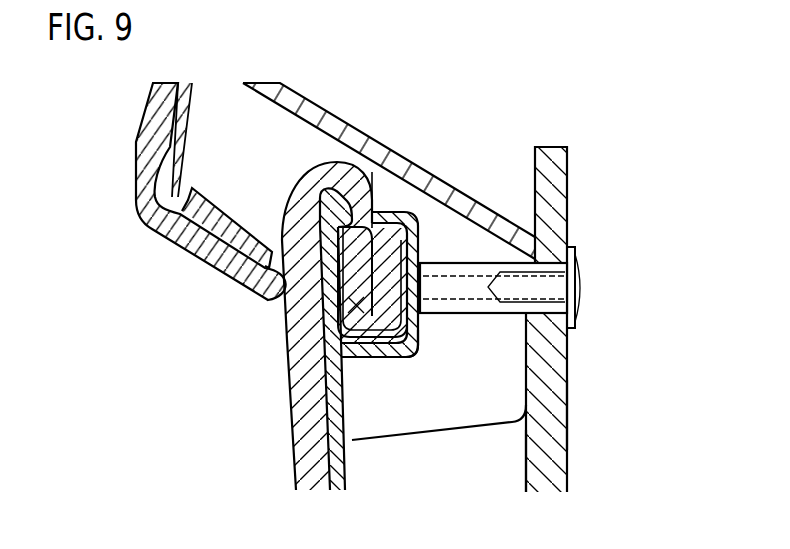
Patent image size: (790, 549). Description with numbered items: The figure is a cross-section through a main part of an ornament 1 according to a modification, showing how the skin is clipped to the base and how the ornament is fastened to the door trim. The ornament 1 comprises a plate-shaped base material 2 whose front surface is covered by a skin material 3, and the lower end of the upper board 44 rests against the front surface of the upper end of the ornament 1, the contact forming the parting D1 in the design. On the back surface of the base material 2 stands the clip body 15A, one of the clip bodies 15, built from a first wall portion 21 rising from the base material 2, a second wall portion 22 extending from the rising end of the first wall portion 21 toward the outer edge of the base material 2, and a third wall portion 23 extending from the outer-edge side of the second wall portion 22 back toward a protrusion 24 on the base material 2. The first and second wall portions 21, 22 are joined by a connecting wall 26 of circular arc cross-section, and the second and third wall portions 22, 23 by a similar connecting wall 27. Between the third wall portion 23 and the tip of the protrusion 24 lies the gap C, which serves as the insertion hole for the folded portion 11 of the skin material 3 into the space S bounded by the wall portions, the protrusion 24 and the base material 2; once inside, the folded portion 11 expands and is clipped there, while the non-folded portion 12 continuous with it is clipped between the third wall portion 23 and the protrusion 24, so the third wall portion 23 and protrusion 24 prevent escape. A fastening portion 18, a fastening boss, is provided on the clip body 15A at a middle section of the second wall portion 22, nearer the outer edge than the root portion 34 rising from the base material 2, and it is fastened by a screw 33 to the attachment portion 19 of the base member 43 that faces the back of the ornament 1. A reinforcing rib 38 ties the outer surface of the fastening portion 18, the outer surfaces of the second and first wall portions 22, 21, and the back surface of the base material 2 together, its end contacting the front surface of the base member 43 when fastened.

The ornament 1 is at (264, 430).
The base material 2 is at (350, 468).
The skin material 3 is at (290, 462).
The folded portion 11 is at (379, 214).
The non-folded portion 12 is at (366, 212).
The clip body 15 is at (568, 319).
The clip body 15A is at (441, 232).
The fastening portion 18 is at (555, 349).
The attachment portion 19 is at (560, 258).
The first wall portion 21 is at (384, 358).
The second wall portion 22 is at (462, 314).
The third wall portion 23 is at (388, 212).
The protrusion 24 is at (340, 208).
The connecting wall 26 is at (426, 352).
The connecting wall 27 is at (428, 192).
The screw 33 is at (581, 294).
The root portion 34 is at (434, 366).
The reinforcing rib 38 is at (500, 420).
The base member 43 is at (568, 412).
The upper board 44 is at (136, 186).
The gap C is at (370, 200).
The parting D1 is at (264, 328).
The space S is at (350, 309).